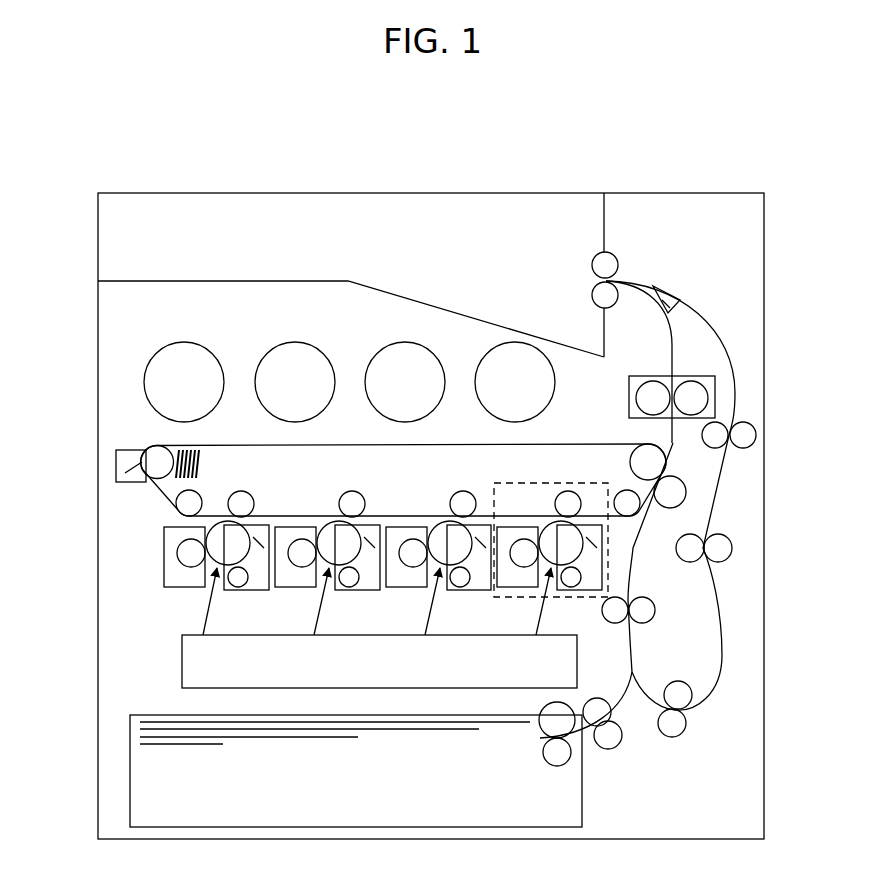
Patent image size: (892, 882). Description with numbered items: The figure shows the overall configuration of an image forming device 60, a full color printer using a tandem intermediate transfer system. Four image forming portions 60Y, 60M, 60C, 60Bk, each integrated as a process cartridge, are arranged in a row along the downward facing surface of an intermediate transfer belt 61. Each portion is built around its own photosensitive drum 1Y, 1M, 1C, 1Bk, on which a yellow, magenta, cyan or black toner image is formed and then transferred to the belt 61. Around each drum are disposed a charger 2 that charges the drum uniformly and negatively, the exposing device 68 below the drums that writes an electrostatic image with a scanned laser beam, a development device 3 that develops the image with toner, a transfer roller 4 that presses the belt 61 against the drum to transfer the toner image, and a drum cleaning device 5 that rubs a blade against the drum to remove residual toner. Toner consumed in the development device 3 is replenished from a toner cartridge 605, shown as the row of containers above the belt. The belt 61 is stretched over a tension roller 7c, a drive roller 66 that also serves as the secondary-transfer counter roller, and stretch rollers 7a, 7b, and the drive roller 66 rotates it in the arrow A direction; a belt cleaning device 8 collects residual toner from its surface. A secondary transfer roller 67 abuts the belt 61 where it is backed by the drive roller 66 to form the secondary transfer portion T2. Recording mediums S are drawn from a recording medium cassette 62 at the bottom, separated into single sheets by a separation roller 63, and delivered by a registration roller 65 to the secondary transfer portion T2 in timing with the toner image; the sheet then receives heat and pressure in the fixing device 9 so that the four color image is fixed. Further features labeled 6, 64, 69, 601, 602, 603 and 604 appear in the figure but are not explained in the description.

The image forming device 60 is at (576, 171).
The upper housing panel 601 is at (437, 306).
The toner cartridge 605 is at (498, 342).
The discharge rollers 69 is at (598, 258).
The sheet discharge path 602 is at (672, 281).
The sheet conveyance path 603 is at (727, 336).
The fixing device 9 is at (643, 380).
The intermediate transfer belt 6 is at (260, 443).
The tension roller 7c is at (153, 455).
The stretch roller 7a is at (192, 500).
The stretch roller 7b is at (622, 493).
The drive roller 66 is at (651, 460).
The secondary transfer roller 67 is at (670, 497).
The secondary transfer portion T2 is at (664, 477).
The belt cleaning device 8 is at (116, 462).
The intermediate transfer belt 61 is at (160, 493).
The arrow A direction A is at (312, 507).
The image forming portion 60Y is at (217, 544).
The image forming portion 60M is at (324, 546).
The image forming portion 60C is at (428, 546).
The image forming portion 60Bk is at (562, 565).
The photosensitive drum 1Y is at (247, 533).
The photosensitive drum 1M is at (362, 534).
The photosensitive drum 1C is at (432, 528).
The photosensitive drum 1Bk is at (553, 522).
The charger 2 is at (569, 580).
The development device 3 is at (516, 573).
The transfer roller 4 is at (568, 492).
The drum cleaning device 5 is at (597, 538).
The exposing device 68 is at (203, 662).
The recording medium cassette 62 is at (583, 810).
The recording medium S is at (438, 724).
The separation roller 63 is at (545, 727).
The sheet conveyance path 64 is at (634, 642).
The registration roller 65 is at (648, 610).
The conveyance rollers 604 is at (672, 728).